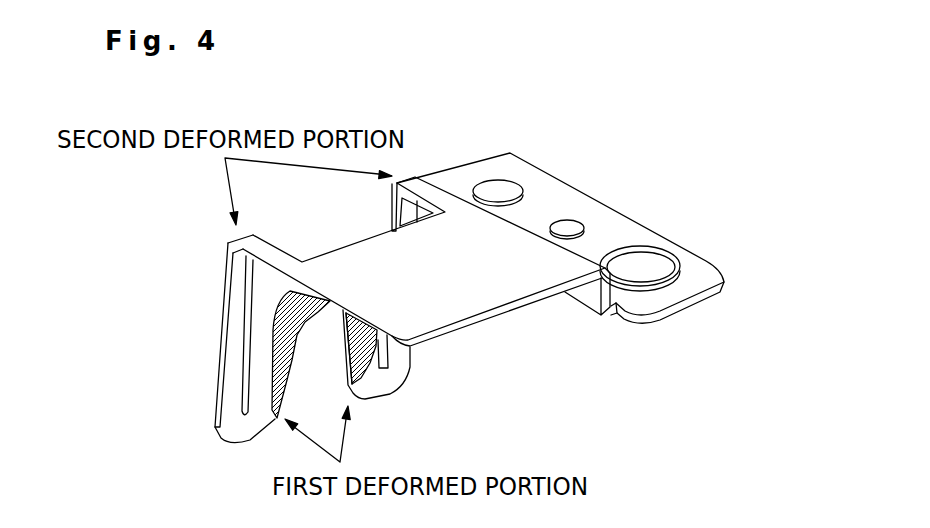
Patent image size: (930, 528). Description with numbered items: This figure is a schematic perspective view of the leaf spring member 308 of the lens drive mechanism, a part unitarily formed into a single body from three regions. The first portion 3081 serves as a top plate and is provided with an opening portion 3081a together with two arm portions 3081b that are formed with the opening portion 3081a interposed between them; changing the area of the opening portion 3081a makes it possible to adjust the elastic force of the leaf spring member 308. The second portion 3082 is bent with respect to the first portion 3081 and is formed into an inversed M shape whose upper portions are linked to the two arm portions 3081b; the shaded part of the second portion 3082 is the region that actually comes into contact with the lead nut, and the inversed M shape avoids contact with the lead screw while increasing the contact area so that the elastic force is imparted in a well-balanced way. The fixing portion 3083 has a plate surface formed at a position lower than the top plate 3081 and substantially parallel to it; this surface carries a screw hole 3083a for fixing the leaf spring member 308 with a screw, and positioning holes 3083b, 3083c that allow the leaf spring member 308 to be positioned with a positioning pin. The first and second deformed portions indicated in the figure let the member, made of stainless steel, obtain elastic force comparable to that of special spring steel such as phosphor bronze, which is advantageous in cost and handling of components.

The leaf spring member 308 is at (493, 108).
The first portion 3081 is at (376, 247).
The opening portion 3081a is at (357, 210).
The arm portions 3081b is at (412, 182).
The second portion 3082 is at (231, 347).
The fixing portion 3083 is at (597, 222).
The screw hole 3083a is at (680, 254).
The positioning hole 3083b is at (585, 223).
The positioning hole 3083c is at (530, 188).